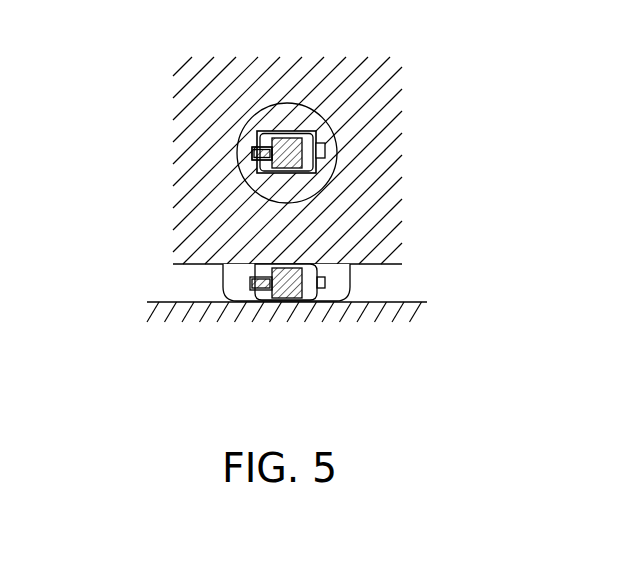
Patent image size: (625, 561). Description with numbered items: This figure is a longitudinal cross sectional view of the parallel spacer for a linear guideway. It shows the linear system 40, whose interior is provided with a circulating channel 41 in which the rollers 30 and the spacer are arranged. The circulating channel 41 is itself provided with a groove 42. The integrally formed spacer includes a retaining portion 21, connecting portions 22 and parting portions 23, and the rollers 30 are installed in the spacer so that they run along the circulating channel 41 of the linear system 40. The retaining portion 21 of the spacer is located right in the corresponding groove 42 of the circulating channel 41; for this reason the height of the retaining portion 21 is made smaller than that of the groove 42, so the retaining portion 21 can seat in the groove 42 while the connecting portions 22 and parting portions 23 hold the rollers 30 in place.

The retaining portion 21 is at (255, 159).
The connecting portions 22 is at (263, 147).
The parting portions 23 is at (283, 155).
The rollers 30 is at (318, 136).
The linear system 40 is at (388, 213).
The circulating channel 41 is at (293, 131).
The groove 42 is at (253, 150).